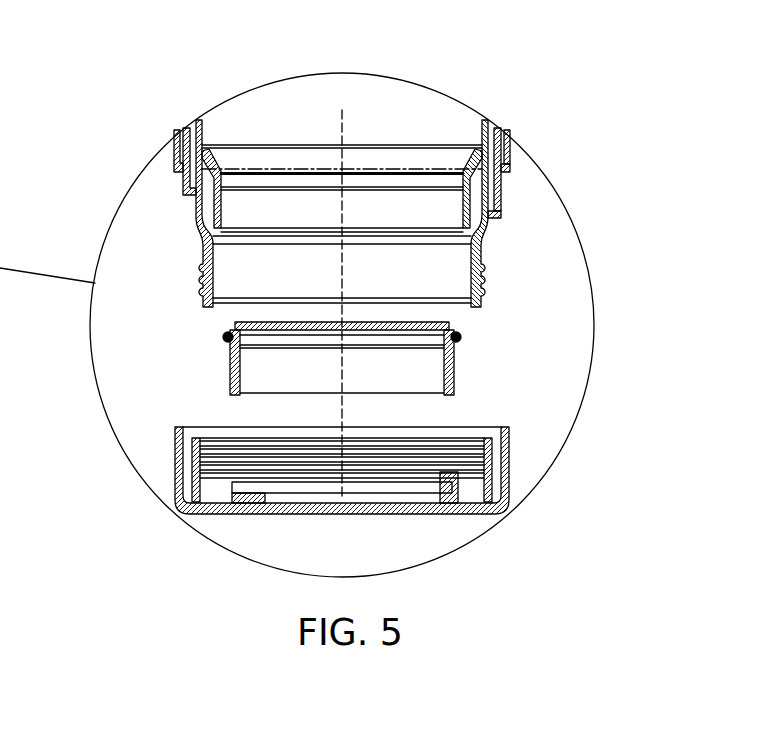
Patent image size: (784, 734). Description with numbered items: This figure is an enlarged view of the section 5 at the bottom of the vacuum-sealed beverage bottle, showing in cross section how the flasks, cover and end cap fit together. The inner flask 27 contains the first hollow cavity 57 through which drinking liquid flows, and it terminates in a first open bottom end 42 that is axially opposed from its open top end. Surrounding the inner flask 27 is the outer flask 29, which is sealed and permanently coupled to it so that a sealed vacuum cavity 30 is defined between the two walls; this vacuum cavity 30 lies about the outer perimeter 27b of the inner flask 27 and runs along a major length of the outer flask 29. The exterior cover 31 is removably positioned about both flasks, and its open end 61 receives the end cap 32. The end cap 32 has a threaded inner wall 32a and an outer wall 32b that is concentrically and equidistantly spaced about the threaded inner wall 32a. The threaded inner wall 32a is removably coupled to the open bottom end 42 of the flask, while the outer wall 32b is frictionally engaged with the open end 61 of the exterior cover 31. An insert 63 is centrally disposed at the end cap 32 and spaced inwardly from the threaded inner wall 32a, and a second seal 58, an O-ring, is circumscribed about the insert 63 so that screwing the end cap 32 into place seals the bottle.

The section 5 is at (0, 141).
The inner flask 27 is at (178, 135).
The outer perimeter 27b is at (493, 214).
The outer flask 29 is at (495, 163).
The sealed vacuum cavity 30 is at (509, 170).
The exterior cover 31 is at (508, 140).
The end cap 32 is at (192, 497).
The threaded inner wall 32a is at (180, 473).
The outer wall 32b is at (175, 440).
The first open bottom end 42 is at (388, 217).
The first hollow cavity 57 is at (283, 97).
The second seal 58 is at (458, 338).
The third open top end 61 is at (182, 187).
The insert 63 is at (230, 372).